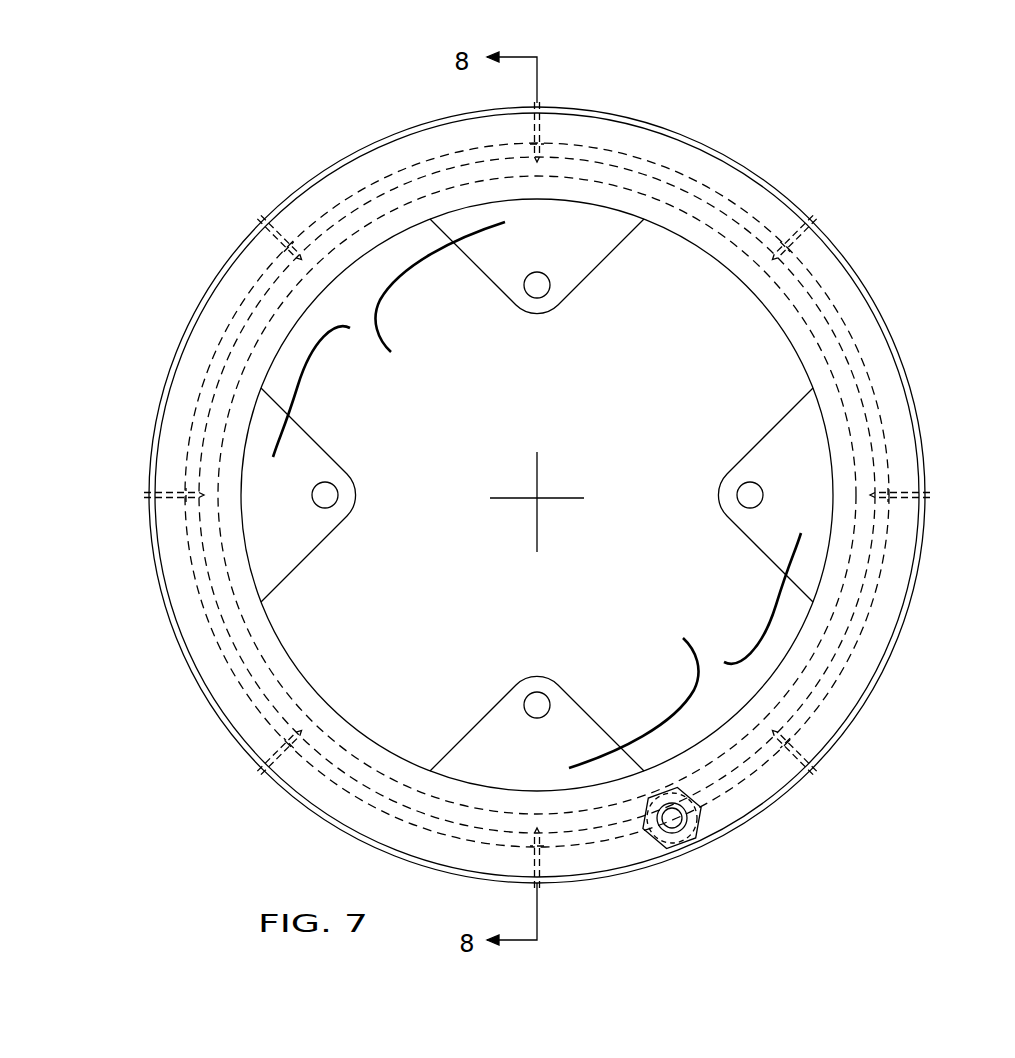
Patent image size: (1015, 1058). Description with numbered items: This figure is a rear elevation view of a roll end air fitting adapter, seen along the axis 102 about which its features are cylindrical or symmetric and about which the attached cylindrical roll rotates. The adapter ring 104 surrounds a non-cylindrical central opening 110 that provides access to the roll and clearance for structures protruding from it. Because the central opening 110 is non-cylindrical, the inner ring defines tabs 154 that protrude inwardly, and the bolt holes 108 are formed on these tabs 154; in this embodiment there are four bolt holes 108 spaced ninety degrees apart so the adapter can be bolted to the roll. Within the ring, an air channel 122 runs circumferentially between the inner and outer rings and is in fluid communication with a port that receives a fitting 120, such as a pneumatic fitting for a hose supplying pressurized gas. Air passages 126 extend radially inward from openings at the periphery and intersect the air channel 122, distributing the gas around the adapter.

The axis 102 is at (538, 525).
The adapter ring 104 is at (888, 820).
The bolt holes 108 is at (537, 285).
The central opening 110 is at (313, 440).
The fitting 120 is at (703, 823).
The air channel 122 is at (825, 287).
The air passages 126 is at (539, 130).
The tabs 154 is at (537, 495).